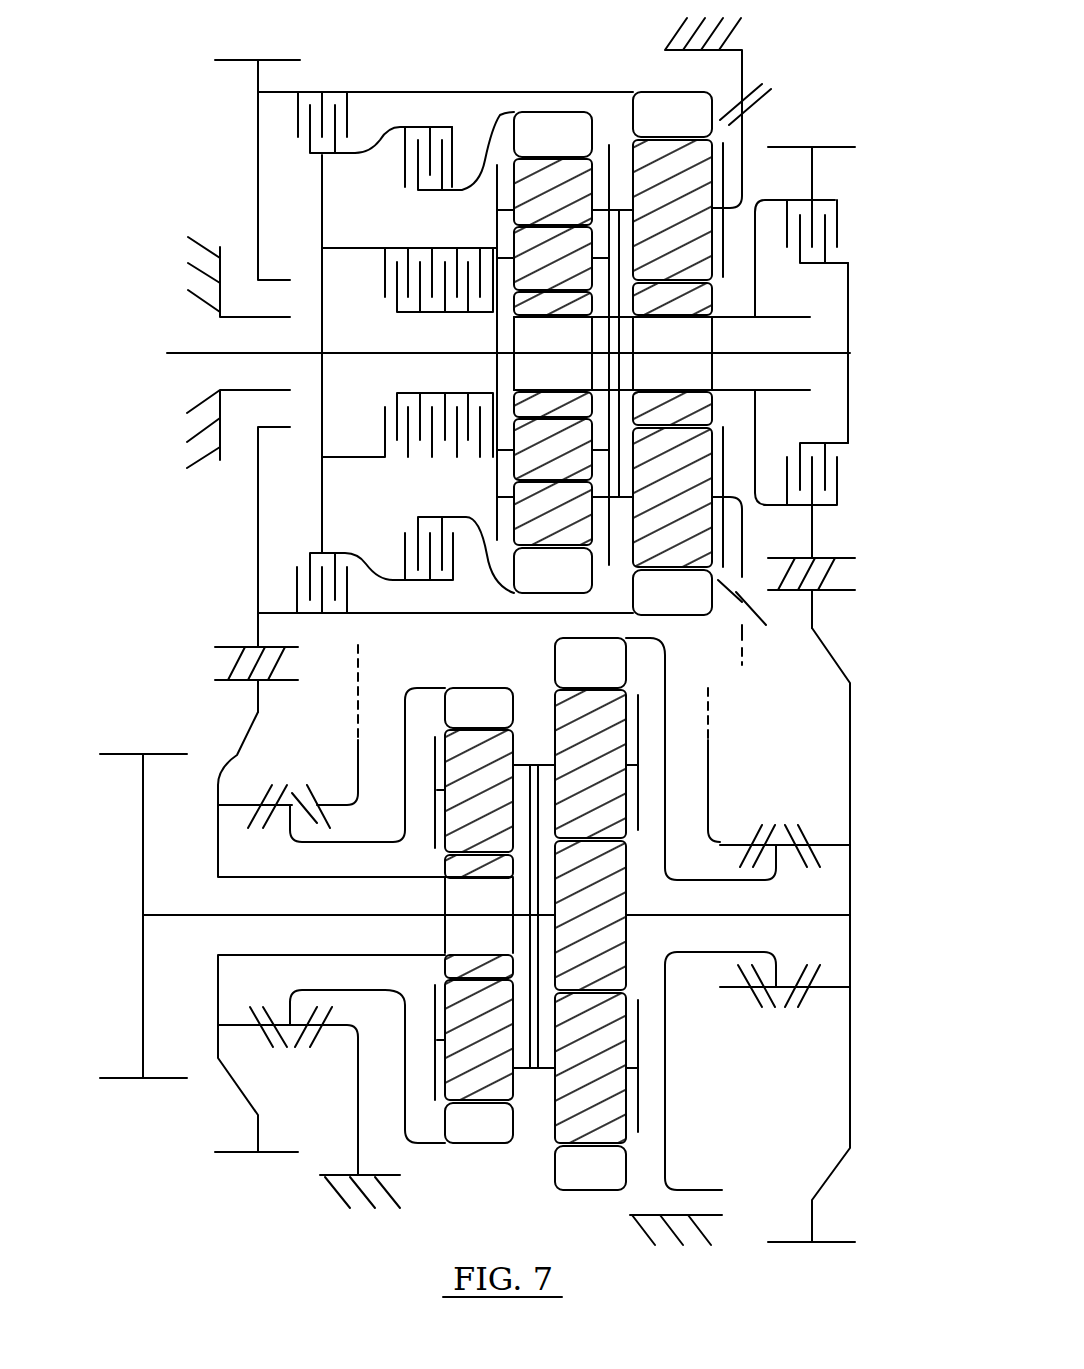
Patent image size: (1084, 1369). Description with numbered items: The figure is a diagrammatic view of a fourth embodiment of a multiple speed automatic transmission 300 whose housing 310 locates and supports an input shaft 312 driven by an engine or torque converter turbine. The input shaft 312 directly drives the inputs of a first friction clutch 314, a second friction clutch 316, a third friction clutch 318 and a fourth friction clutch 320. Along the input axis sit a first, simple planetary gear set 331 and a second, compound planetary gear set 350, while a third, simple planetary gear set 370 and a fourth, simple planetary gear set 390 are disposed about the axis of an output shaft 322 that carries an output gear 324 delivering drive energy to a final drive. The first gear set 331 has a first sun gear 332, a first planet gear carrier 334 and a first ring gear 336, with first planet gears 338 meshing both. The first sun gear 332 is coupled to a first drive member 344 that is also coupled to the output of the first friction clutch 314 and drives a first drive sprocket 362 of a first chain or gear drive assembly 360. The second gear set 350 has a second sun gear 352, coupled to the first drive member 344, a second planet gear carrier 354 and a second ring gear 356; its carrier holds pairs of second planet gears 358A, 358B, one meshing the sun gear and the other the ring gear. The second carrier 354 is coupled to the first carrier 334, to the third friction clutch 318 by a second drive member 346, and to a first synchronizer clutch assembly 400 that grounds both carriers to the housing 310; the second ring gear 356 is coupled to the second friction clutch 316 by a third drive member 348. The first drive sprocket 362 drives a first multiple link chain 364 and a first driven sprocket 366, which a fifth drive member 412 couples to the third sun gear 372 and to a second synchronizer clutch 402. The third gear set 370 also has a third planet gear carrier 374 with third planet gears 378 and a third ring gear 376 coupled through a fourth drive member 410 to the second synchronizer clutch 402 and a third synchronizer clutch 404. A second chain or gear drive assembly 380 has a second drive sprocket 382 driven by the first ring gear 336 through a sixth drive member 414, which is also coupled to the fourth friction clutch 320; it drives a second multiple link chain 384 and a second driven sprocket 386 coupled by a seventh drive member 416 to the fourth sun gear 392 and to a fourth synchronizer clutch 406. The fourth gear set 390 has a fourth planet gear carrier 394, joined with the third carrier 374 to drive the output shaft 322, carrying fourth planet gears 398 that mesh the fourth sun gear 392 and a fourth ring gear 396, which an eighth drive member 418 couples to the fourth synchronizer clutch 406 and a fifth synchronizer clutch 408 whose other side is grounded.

The multiple speed automatic transmission 300 is at (182, 182).
The housing 310 is at (728, 35).
The input shaft 312 is at (186, 351).
The first friction clutch 314 is at (827, 217).
The second friction clutch 316 is at (425, 160).
The third friction clutch 318 is at (420, 407).
The fourth friction clutch 320 is at (334, 97).
The output shaft 322 is at (163, 913).
The output gear 324 is at (142, 983).
The first planetary gear set 331 is at (632, 73).
The first sun gear 332 is at (677, 300).
The first planet gear carrier 334 is at (730, 482).
The first ring gear 336 is at (658, 110).
The first planet gears 338 is at (680, 458).
The first drive member 344 is at (784, 316).
The second drive member 346 is at (487, 313).
The third drive member 348 is at (497, 200).
The second planetary gear set 350 is at (545, 73).
The second sun gear 352 is at (527, 402).
The second planet gear carrier 354 is at (493, 513).
The second ring gear 356 is at (527, 133).
The second planet gears 358A is at (527, 463).
The second planet gears 358B is at (530, 522).
The first chain or gear drive assembly 360 is at (877, 187).
The first drive sprocket 362 is at (823, 147).
The first multiple link chain 364 is at (845, 571).
The first driven sprocket 366 is at (795, 1245).
The third planetary gear set 370 is at (603, 1262).
The third sun gear 372 is at (607, 902).
The third planet gear carrier 374 is at (637, 1103).
The third ring gear 376 is at (603, 1183).
The third planet gears 378 is at (565, 1117).
The second chain or gear drive assembly 380 is at (192, 96).
The second drive sprocket 382 is at (266, 58).
The second multiple link chain 384 is at (228, 663).
The second driven sprocket 386 is at (240, 1156).
The fourth planetary gear set 390 is at (440, 1222).
The fourth sun gear 392 is at (453, 963).
The fourth planet gear carrier 394 is at (438, 763).
The fourth ring gear 396 is at (487, 1125).
The fourth planet gears 398 is at (455, 1083).
The first synchronizer clutch assembly 400 is at (755, 80).
The second synchronizer clutch 402 is at (807, 1000).
The third synchronizer clutch 404 is at (753, 832).
The fourth synchronizer clutch 406 is at (258, 808).
The fifth synchronizer clutch 408 is at (312, 1040).
The fourth drive member 410 is at (708, 997).
The fifth drive member 412 is at (827, 918).
The sixth drive member 414 is at (276, 95).
The seventh drive member 416 is at (282, 880).
The eighth drive member 418 is at (333, 990).